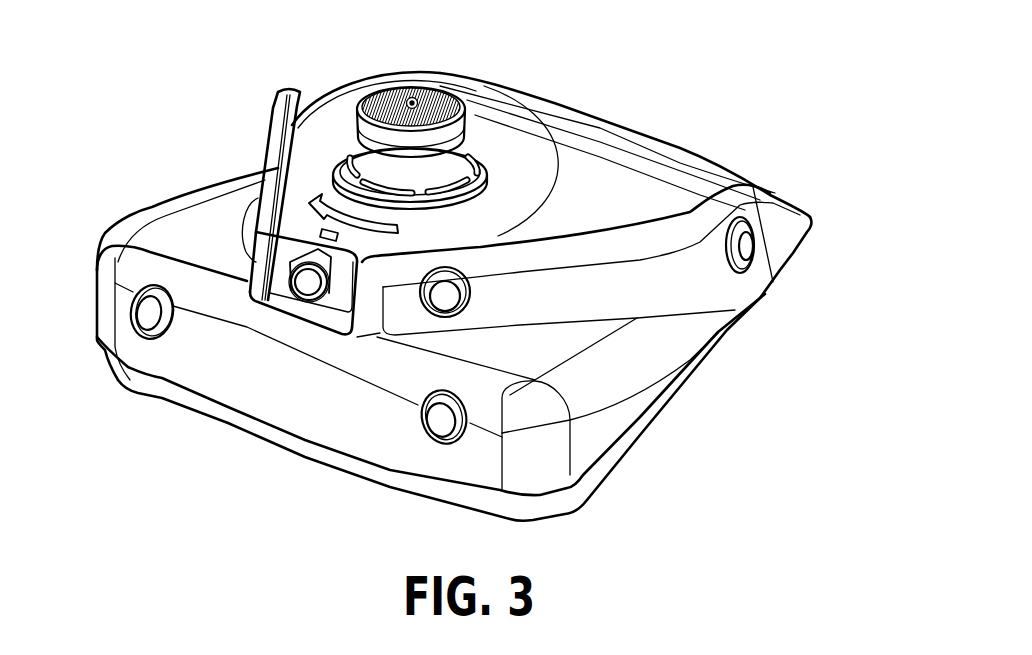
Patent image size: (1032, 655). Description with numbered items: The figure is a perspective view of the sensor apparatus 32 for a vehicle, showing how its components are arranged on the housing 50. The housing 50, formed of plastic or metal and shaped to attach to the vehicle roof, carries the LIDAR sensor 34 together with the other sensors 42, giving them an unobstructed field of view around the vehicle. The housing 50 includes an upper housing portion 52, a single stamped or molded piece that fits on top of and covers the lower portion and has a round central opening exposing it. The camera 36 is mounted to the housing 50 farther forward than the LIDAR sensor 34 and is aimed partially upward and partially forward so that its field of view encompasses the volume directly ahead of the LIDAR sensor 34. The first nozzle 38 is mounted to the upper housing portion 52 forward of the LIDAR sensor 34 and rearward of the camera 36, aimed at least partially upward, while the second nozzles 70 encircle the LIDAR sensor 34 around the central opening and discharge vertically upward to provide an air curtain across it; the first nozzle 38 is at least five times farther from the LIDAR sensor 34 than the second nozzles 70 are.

The sensor apparatus 32 is at (674, 88).
The LIDAR sensor 34 is at (394, 163).
The camera 36 is at (313, 203).
The first nozzle 38 is at (293, 268).
The other sensors 42 is at (754, 247).
The housing 50 is at (703, 352).
The upper housing portion 52 is at (713, 295).
The second nozzles 70 is at (356, 168).